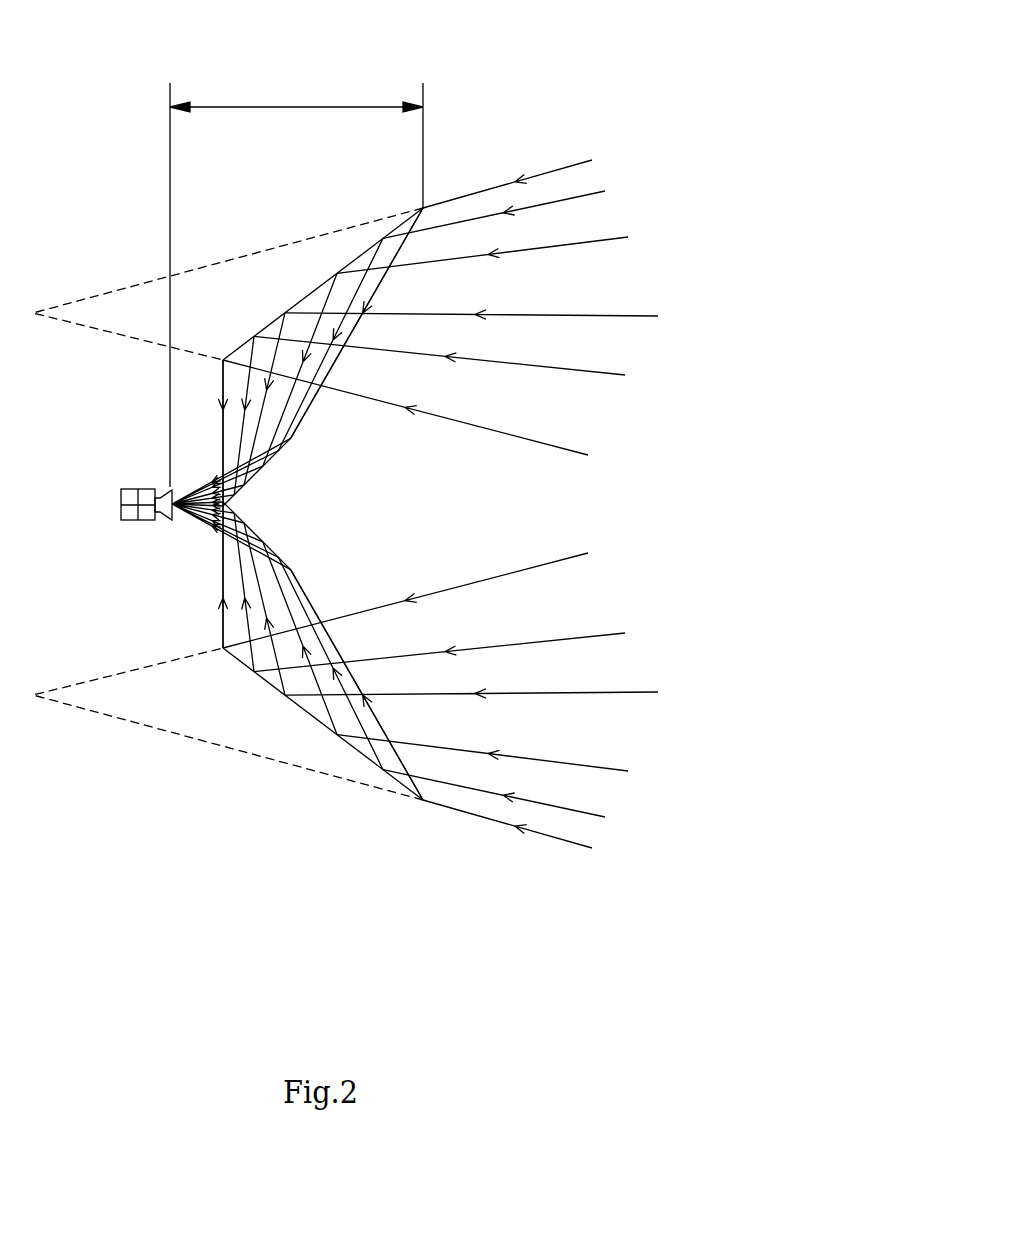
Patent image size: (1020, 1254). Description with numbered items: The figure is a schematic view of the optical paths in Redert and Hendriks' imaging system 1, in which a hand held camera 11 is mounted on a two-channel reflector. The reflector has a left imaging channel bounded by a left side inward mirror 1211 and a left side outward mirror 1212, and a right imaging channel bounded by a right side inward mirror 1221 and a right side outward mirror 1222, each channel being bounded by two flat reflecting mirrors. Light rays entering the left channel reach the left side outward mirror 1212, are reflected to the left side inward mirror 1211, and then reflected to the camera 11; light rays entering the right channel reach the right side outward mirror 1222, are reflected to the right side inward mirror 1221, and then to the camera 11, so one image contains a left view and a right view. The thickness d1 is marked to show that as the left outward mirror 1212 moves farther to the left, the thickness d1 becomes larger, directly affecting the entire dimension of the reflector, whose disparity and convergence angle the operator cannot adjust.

The imaging system 1 is at (643, 243).
The camera 11 is at (122, 518).
The left side inward mirror 1211 is at (260, 469).
The left side outward mirror 1212 is at (330, 283).
The right side inward mirror 1221 is at (283, 562).
The right side outward mirror 1222 is at (330, 725).
The thickness d1 is at (296, 275).